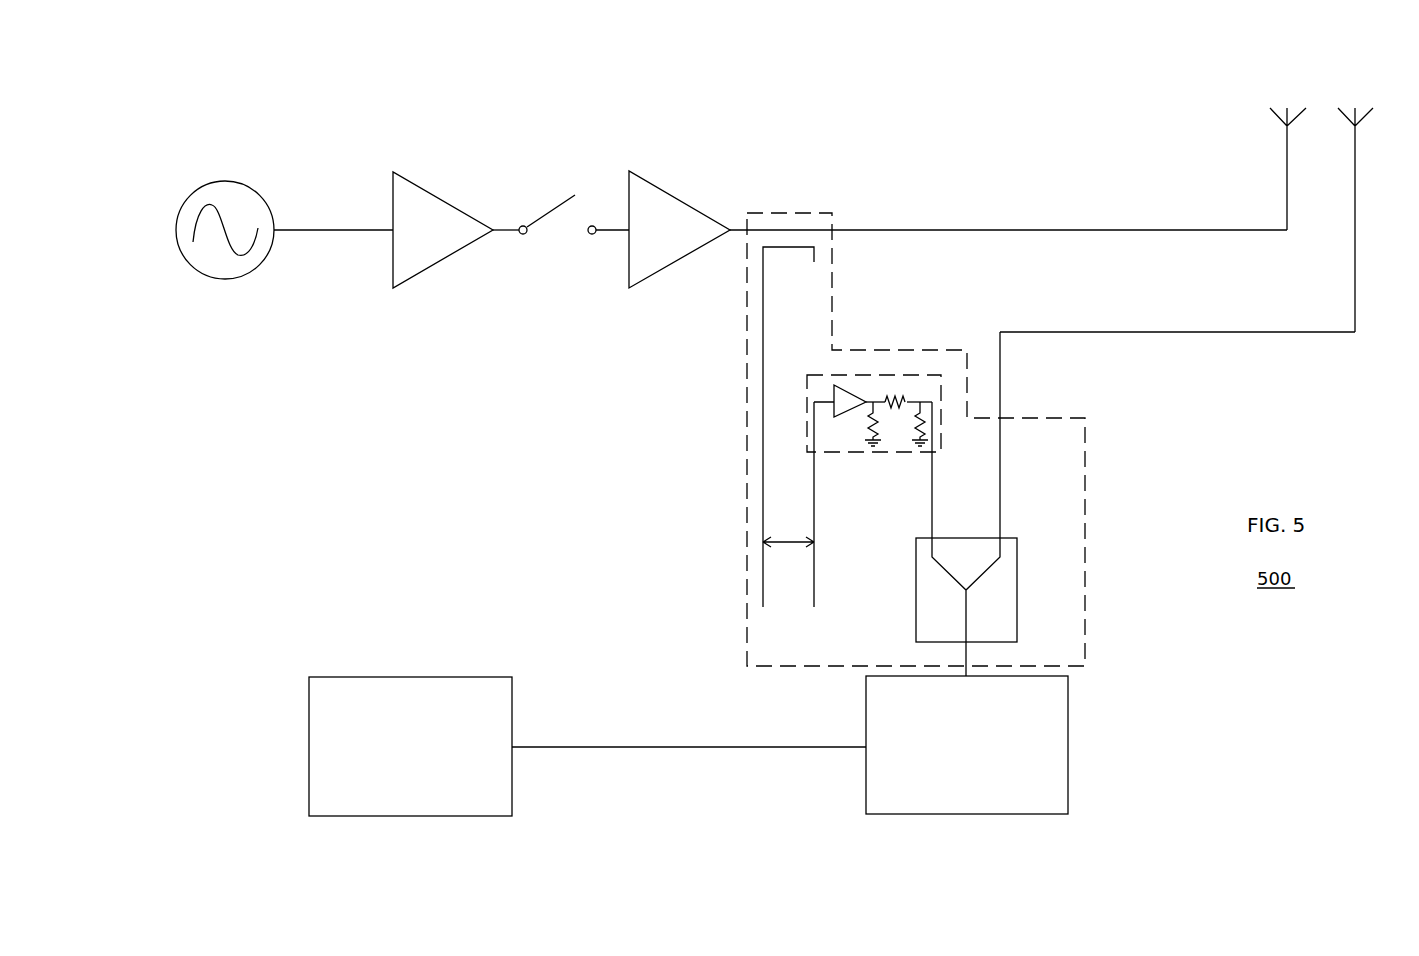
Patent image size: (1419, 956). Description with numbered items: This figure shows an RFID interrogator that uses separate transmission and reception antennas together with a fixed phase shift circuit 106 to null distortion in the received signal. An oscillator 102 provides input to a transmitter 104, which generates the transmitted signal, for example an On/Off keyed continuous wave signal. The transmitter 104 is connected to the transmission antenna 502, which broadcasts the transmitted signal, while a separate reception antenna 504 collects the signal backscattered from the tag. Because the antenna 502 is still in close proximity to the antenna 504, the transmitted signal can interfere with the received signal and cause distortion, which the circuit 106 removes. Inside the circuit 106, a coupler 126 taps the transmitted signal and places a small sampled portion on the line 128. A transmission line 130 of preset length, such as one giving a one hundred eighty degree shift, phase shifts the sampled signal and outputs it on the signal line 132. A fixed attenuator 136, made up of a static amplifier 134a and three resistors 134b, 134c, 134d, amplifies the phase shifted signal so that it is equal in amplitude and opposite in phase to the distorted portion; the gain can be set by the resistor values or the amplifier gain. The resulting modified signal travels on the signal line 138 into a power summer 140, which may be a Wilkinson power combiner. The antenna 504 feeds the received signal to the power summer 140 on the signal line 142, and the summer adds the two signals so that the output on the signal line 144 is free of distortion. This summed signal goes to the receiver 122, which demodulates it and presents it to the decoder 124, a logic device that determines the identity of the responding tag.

The oscillator 102 is at (222, 180).
The transmitter 104 is at (612, 110).
The circuit 106 is at (746, 487).
The receiver 122 is at (1068, 713).
The decoder 124 is at (512, 691).
The coupler 126 is at (784, 258).
The line 128 is at (763, 370).
The transmission line 130 is at (773, 530).
The signal line 132 is at (815, 510).
The static amplifier 134a is at (850, 411).
The resistor 134b is at (890, 400).
The resistor 134c is at (916, 437).
The resistor 134d is at (880, 441).
The fixed attenuator 136 is at (858, 429).
The signal line 138 is at (935, 523).
The power summer 140 is at (1017, 615).
The signal line 142 is at (1003, 485).
The signal line 144 is at (968, 650).
The antenna 502 is at (1291, 92).
The antenna 504 is at (1362, 92).